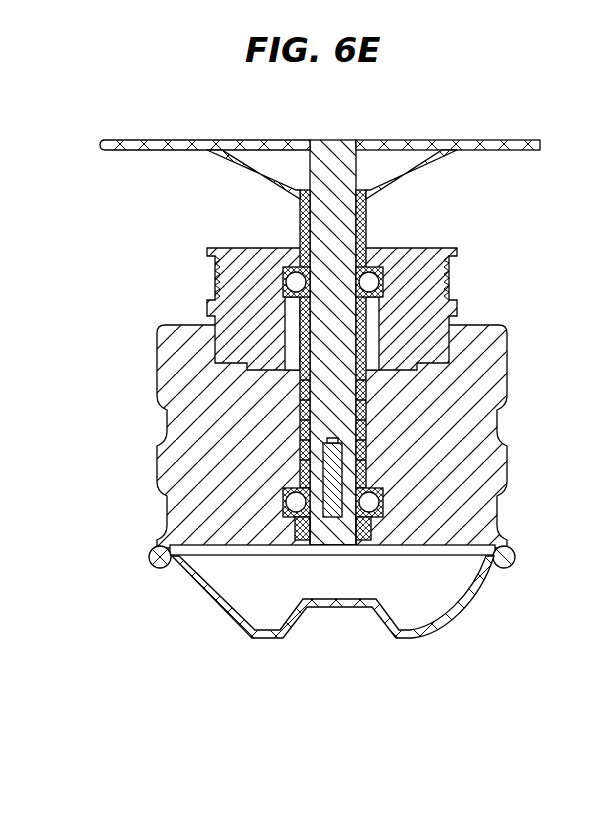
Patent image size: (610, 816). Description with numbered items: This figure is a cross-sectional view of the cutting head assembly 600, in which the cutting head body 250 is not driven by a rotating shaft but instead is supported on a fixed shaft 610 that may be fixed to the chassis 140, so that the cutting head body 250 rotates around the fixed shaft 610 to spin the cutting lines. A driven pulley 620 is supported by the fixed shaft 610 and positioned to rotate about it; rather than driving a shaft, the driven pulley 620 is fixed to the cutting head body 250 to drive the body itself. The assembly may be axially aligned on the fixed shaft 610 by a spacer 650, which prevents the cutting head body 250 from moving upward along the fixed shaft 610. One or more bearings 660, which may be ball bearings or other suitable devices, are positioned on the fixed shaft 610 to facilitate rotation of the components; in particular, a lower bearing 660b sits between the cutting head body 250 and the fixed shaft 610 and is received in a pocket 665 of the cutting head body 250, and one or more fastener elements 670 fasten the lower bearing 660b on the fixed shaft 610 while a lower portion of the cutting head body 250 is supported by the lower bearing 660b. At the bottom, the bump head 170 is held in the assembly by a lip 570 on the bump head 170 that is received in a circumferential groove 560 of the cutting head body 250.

The chassis 140 is at (108, 143).
The bump head 170 is at (402, 641).
The cutting head body 250 is at (508, 562).
The circumferential groove 560 is at (172, 550).
The lip 570 is at (160, 567).
The cutting head assembly 600 is at (466, 117).
The fixed shaft 610 is at (322, 141).
The driven pulley 620 is at (453, 310).
The spacer 650 is at (372, 275).
The bearings 660 is at (442, 362).
The lower bearing 660b is at (388, 268).
The pocket 665 is at (385, 500).
The fastener elements 670 is at (307, 549).